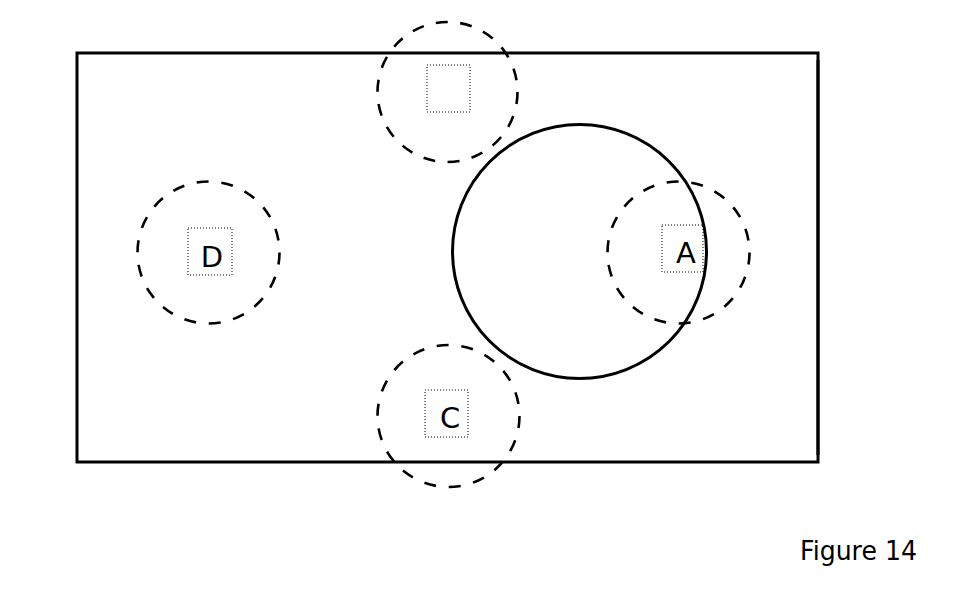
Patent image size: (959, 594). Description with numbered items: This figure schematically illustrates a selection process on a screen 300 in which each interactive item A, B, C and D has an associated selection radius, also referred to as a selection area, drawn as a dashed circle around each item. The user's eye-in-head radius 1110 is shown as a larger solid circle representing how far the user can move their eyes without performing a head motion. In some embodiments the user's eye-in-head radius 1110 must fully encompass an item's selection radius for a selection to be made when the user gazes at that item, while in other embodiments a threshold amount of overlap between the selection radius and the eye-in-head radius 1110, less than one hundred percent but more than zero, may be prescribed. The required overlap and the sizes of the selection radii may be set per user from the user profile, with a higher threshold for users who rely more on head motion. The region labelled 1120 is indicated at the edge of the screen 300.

The screen 300 is at (56, 536).
The eye-in-head radius 1110 is at (470, 163).
The display area 1120 is at (798, 150).